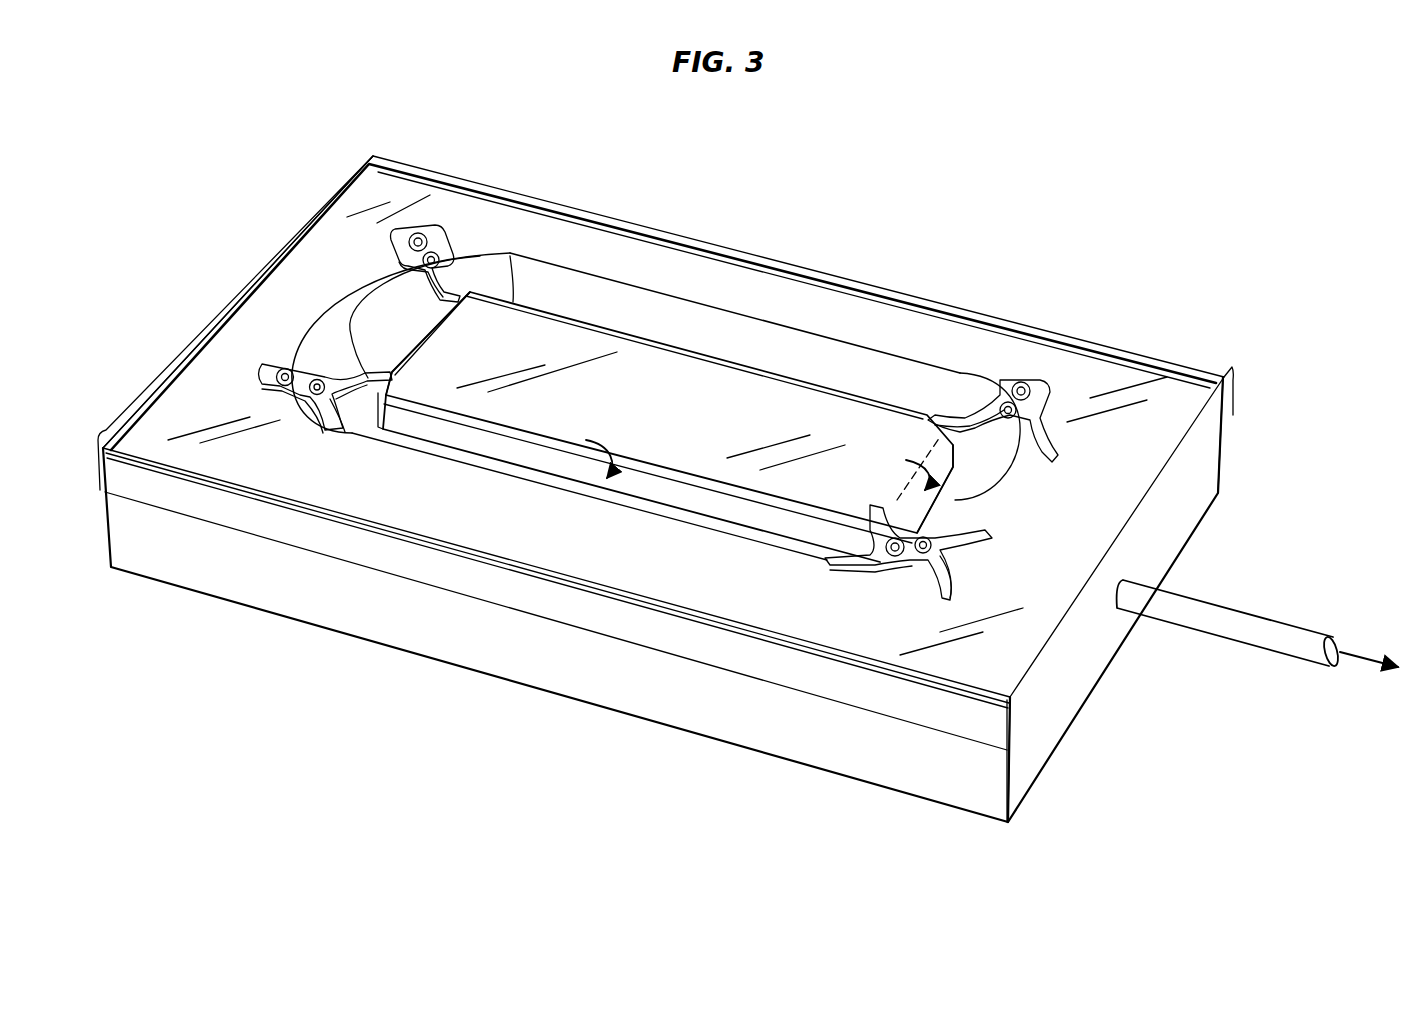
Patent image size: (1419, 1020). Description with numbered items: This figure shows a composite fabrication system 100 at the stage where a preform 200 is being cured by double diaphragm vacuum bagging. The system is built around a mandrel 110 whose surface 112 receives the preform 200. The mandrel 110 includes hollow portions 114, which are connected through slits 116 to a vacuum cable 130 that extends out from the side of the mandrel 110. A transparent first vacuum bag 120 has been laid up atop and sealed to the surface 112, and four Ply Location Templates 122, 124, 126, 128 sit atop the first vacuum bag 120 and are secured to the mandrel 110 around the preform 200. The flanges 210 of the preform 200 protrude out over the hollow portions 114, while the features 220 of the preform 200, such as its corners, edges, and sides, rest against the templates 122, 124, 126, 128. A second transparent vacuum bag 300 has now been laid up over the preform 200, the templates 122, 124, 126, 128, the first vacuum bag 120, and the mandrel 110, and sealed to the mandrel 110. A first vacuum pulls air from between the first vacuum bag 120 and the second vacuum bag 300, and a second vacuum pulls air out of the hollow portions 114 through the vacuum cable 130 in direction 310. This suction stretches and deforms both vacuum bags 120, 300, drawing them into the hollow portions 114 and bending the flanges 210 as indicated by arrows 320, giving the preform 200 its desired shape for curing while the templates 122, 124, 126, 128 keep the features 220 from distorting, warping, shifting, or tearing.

The composite fabrication system 100 is at (1090, 205).
The mandrel 110 is at (1214, 462).
The surface 112 is at (375, 186).
The hollow portions 114 is at (776, 316).
The slits 116 is at (356, 302).
The first vacuum bag 120 is at (668, 268).
The Ply Location Template 122 is at (1020, 382).
The Ply Location Template 124 is at (394, 237).
The Ply Location Template 126 is at (262, 378).
The Ply Location Template 128 is at (955, 548).
The vacuum cable 130 is at (1250, 626).
The preform 200 is at (682, 436).
The flanges 210 is at (576, 482).
The features 220 is at (392, 382).
The second vacuum bag 300 is at (166, 356).
The direction 310 is at (1378, 648).
The arrows 320 is at (604, 440).